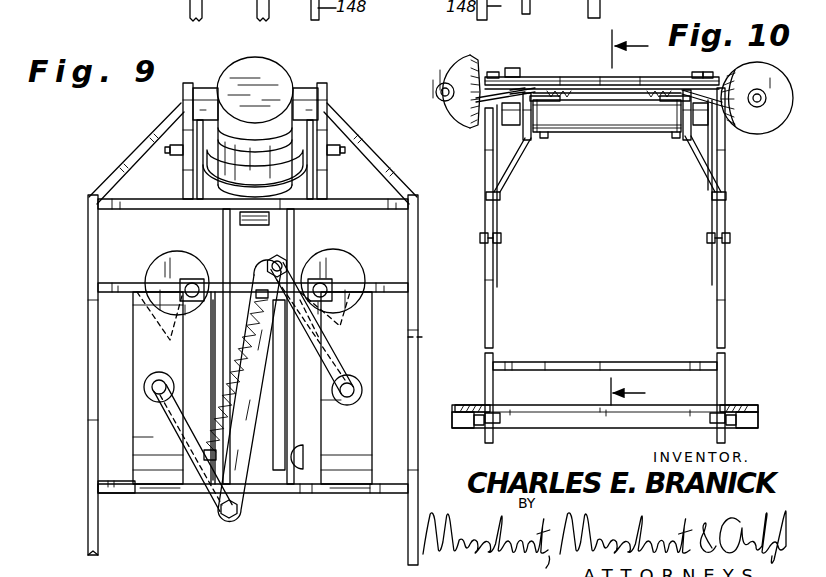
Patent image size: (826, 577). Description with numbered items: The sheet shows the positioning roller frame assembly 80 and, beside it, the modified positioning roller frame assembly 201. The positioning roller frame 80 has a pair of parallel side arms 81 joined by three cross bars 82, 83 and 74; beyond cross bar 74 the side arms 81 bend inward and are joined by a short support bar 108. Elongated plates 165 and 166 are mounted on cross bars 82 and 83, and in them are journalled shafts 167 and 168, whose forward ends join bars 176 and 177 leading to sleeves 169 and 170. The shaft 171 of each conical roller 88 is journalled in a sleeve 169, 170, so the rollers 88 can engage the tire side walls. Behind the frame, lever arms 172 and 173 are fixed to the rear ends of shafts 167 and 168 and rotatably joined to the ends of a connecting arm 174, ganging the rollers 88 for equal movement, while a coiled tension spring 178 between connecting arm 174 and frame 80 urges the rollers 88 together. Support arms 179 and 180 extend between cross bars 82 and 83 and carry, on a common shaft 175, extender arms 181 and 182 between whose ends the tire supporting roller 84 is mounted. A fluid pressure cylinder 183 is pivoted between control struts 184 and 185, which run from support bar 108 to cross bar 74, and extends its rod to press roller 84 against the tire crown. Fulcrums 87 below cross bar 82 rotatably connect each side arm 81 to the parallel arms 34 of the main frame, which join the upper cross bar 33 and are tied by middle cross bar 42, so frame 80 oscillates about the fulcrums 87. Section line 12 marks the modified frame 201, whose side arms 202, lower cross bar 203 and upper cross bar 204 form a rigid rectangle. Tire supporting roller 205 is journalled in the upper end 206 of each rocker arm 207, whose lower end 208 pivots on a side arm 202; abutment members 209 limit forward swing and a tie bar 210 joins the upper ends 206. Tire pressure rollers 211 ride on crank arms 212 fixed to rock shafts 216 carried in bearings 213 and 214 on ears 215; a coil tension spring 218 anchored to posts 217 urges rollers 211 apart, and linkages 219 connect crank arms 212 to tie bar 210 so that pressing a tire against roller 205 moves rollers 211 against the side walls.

In FIG. 9, the positioning roller frame assembly 80 is at (94, 258).
In FIG. 9, the side arms 81 is at (87, 520).
In FIG. 9, the cross bar 82 is at (106, 489).
In FIG. 9, the cross bar 83 is at (100, 292).
In FIG. 9, the tire supporting roller 84 is at (270, 226).
In FIG. 9, the cross bar 74 is at (108, 210).
In FIG. 9, the conical rollers 88 is at (170, 256).
In FIG. 9, the support bar 108 is at (276, 122).
In FIG. 9, the elongated plates 165 is at (134, 461).
In FIG. 9, the elongated plates 166 is at (357, 466).
In FIG. 9, the shaft 167 is at (144, 387).
In FIG. 9, the shaft 168 is at (361, 395).
In FIG. 9, the sleeve 169 is at (185, 281).
In FIG. 9, the sleeve 170 is at (325, 278).
In FIG. 9, the shaft 171 is at (232, 278).
In FIG. 9, the lever arm 172 is at (180, 432).
In FIG. 9, the lever arm 173 is at (357, 358).
In FIG. 9, the connecting arm 174 is at (247, 473).
In FIG. 9, the common shaft 175 is at (305, 455).
In FIG. 9, the bar 176 is at (183, 347).
In FIG. 9, the bar 177 is at (433, 337).
In FIG. 9, the coiled tension spring 178 is at (226, 386).
In FIG. 9, the support arm 179 is at (218, 340).
In FIG. 9, the support arm 180 is at (292, 405).
In FIG. 9, the extender arm 181 is at (224, 228).
In FIG. 9, the extender arm 182 is at (292, 222).
In FIG. 9, the fluid pressure cylinder 183 is at (277, 80).
In FIG. 9, the control strut 184 is at (175, 141).
In FIG. 9, the control strut 185 is at (318, 190).
In FIG. 10, the section line 12 is at (606, 217).
In FIG. 10, the upper cross bar 33 is at (460, 428).
In FIG. 10, the parallel arms 34 is at (472, 405).
In FIG. 10, the middle cross bar 42 is at (551, 428).
In FIG. 10, the fulcrums 87 is at (500, 413).
In FIG. 10, the positioning roller frame assembly 201 is at (632, 265).
In FIG. 10, the side arms 202 is at (494, 300).
In FIG. 10, the lower cross bar 203 is at (592, 362).
In FIG. 10, the upper cross bar 204 is at (650, 77).
In FIG. 10, the tire supporting roller 205 is at (627, 132).
In FIG. 10, the upper end 206 is at (527, 125).
In FIG. 10, the rocker arms 207 is at (517, 168).
In FIG. 10, the lower end 208 is at (502, 237).
In FIG. 10, the abutment members 209 is at (487, 198).
In FIG. 10, the tie bar 210 is at (592, 143).
In FIG. 10, the tire pressure rollers 211 is at (428, 99).
In FIG. 10, the crank arm 212 is at (496, 72).
In FIG. 10, the bearing 213 is at (513, 68).
In FIG. 10, the bearing 214 is at (716, 150).
In FIG. 10, the ears 215 is at (503, 123).
In FIG. 10, the rock shaft 216 is at (548, 90).
In FIG. 10, the post 217 is at (542, 92).
In FIG. 10, the coil tension spring 218 is at (602, 130).
In FIG. 10, the linkages 219 is at (460, 92).